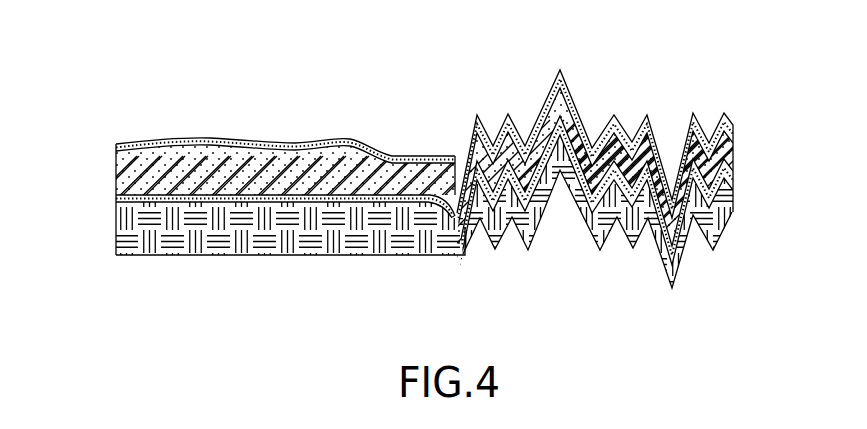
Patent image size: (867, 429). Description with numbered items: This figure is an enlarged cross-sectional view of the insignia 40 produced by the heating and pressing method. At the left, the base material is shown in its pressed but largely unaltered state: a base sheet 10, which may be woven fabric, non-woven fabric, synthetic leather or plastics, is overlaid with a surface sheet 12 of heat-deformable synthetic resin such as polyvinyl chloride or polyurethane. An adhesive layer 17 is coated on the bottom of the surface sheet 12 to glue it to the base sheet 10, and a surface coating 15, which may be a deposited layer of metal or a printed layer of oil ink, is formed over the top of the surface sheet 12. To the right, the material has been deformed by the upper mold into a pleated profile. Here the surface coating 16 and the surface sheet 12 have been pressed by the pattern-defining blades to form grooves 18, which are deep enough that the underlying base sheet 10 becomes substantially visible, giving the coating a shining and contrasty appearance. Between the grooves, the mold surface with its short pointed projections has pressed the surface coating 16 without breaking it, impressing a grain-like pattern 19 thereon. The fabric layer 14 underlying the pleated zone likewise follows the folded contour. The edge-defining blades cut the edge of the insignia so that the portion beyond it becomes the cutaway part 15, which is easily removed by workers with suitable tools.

The base sheet 10 is at (130, 235).
The surface sheet 12 is at (110, 169).
The adhesive layer 14 is at (632, 243).
The cutaway part 15 is at (187, 150).
The surface coating 16 is at (477, 120).
The edge 17 is at (453, 212).
The groove 18 is at (674, 150).
The grain-like pattern 19 is at (603, 112).
The insignia 40 is at (636, 93).